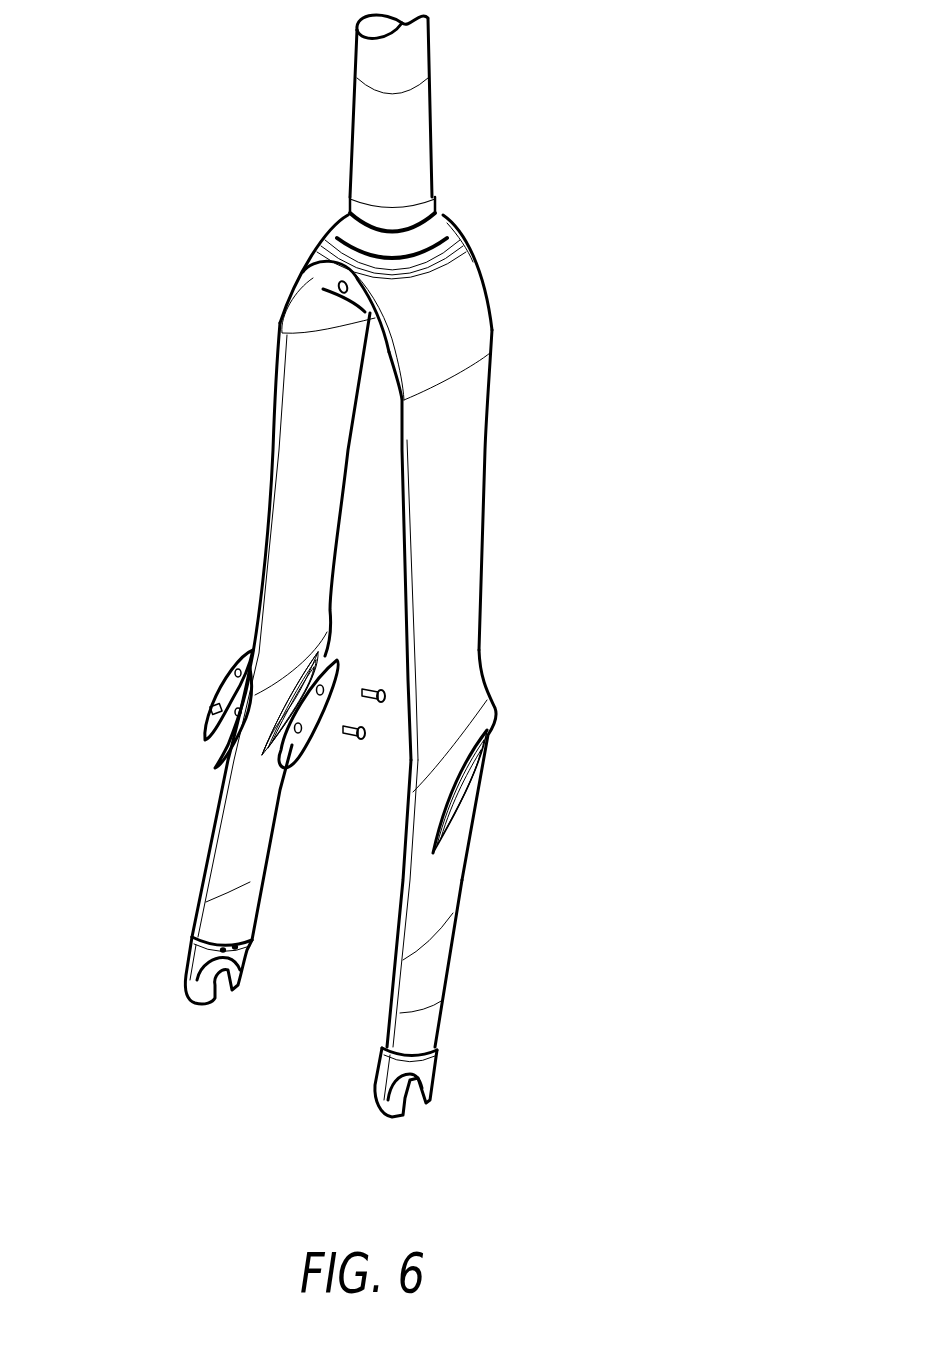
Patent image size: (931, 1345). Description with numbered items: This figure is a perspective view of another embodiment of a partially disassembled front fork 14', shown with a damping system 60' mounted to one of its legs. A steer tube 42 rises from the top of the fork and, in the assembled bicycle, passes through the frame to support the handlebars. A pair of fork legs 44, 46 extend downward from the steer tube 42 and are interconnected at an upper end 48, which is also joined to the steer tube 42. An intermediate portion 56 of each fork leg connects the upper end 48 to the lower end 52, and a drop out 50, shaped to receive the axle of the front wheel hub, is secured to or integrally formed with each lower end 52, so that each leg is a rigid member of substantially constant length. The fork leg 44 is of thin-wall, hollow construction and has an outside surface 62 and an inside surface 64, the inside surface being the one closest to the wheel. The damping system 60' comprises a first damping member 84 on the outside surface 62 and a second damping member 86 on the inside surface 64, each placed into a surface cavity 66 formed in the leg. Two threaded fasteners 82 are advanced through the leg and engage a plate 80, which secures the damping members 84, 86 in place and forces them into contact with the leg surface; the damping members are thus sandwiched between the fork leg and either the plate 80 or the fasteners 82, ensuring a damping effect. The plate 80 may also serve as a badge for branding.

The fork 14' is at (333, 566).
The steer tube 42 is at (417, 140).
The upper end 48 is at (467, 265).
The fork leg 44 is at (235, 408).
The fork leg 46 is at (522, 452).
The inside surface 64 is at (280, 580).
The cavity 66 is at (308, 672).
The intermediate portion 56 is at (466, 607).
The outside surface 62 is at (456, 657).
The lower end 52 is at (437, 1020).
The drop out 50 is at (420, 1085).
The damping system 60' is at (223, 729).
The plate 80 is at (218, 687).
The first damping member 84 is at (208, 752).
The second damping member 86 is at (290, 748).
The threaded fastener 82 is at (384, 701).